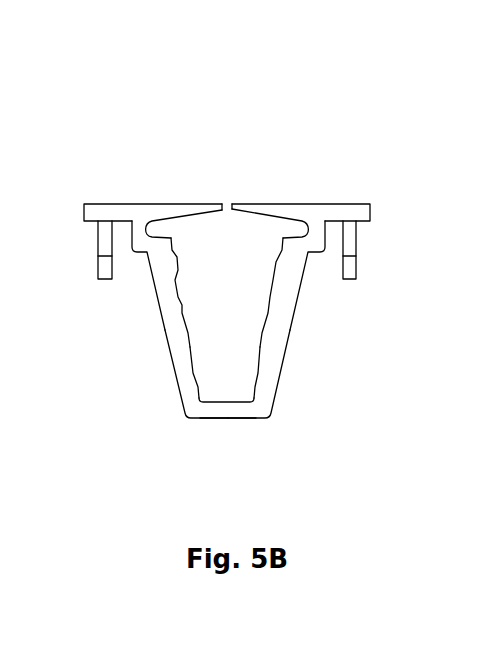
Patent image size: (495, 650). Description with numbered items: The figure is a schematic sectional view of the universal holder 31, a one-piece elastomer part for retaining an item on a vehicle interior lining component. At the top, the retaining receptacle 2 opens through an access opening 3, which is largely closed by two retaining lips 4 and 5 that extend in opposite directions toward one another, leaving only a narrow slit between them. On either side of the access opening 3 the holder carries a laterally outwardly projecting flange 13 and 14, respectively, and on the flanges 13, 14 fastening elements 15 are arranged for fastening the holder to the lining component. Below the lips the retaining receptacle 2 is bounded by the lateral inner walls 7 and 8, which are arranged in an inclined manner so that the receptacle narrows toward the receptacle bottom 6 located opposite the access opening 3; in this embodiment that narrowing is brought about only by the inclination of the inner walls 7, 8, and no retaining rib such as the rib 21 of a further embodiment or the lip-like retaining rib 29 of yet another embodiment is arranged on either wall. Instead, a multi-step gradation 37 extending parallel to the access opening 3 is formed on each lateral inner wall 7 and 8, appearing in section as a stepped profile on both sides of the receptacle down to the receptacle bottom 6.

The retaining receptacle 2 is at (226, 400).
The access opening 3 is at (226, 222).
The retaining lip 4 is at (190, 205).
The retaining lip 5 is at (267, 205).
The receptacle bottom 6 is at (241, 412).
The lateral inner wall 7 is at (185, 378).
The lateral inner wall 8 is at (273, 380).
The flange 13 is at (108, 213).
The flange 14 is at (347, 205).
The fastening element 15 is at (103, 242).
The retaining rib 21 is at (172, 296).
The lip-like retaining rib 29 is at (190, 349).
The universal holder 31 is at (240, 112).
The multi-step gradation 37 is at (198, 390).